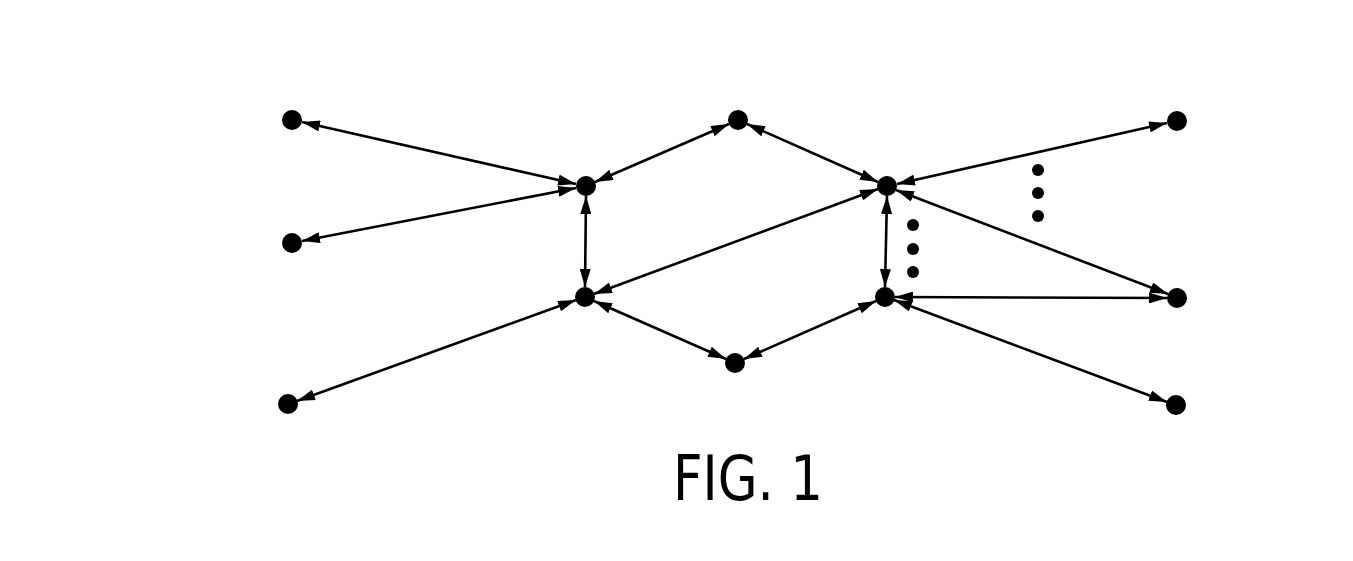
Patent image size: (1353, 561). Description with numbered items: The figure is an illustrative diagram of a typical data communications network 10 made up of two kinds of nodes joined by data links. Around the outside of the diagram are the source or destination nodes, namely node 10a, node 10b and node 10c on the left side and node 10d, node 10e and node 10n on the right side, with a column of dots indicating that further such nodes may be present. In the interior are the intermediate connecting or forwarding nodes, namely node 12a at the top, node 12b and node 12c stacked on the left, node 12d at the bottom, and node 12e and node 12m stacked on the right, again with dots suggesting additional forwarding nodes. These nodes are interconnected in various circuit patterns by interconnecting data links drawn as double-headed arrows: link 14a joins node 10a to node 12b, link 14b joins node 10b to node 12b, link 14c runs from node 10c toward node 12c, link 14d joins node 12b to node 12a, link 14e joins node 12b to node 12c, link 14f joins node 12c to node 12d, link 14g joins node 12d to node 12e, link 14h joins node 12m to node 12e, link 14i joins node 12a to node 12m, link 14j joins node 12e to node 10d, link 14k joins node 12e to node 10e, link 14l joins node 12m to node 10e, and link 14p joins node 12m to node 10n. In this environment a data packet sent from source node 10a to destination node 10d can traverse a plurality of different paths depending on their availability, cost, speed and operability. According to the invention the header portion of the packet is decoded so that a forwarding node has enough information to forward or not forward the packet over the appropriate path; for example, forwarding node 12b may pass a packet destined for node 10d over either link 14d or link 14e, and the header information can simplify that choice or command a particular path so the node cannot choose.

The data communications network 10 is at (548, 418).
The source node 10a is at (283, 122).
The source/destination node 10b is at (283, 245).
The source/destination node 10c is at (278, 407).
The destination node 10d is at (1185, 403).
The source/destination node 10e is at (1185, 296).
The source/destination node 10n is at (1185, 119).
The intermediate forwarding node 12a is at (738, 112).
The intermediate forwarding node 12b is at (586, 178).
The intermediate forwarding node 12c is at (585, 305).
The intermediate forwarding node 12d is at (735, 371).
The intermediate forwarding node 12e is at (886, 305).
The intermediate forwarding node 12m is at (889, 177).
The data link 14a is at (377, 138).
The data link 14b is at (402, 223).
The data link 14c is at (400, 365).
The data link 14d is at (662, 155).
The data link 14e is at (587, 242).
The data link 14f is at (655, 324).
The data link 14g is at (807, 333).
The data link 14h is at (884, 232).
The data link 14i is at (802, 145).
The data link 14j is at (1052, 362).
The data link 14k is at (1118, 300).
The data link 14l is at (1007, 233).
The data link 14p is at (1080, 147).